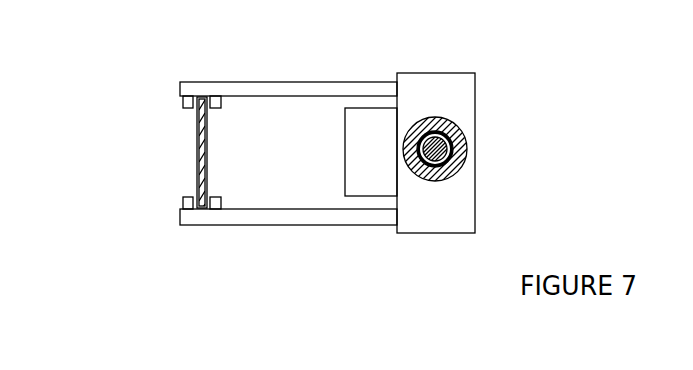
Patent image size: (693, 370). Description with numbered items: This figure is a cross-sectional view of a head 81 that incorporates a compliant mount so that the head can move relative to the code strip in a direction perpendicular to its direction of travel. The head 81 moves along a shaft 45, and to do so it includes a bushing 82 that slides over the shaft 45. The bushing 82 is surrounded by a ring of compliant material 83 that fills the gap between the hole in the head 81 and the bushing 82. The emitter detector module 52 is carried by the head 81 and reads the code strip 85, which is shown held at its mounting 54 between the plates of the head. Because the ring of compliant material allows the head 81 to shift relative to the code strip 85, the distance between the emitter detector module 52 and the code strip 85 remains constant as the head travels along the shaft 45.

The support plate 54 is at (332, 90).
The code strip 85 is at (200, 192).
The emitter detector module 52 is at (377, 183).
The head 81 is at (465, 98).
The bushing 83 is at (463, 140).
The shaft 45 is at (463, 158).
The bushing 82 is at (427, 168).